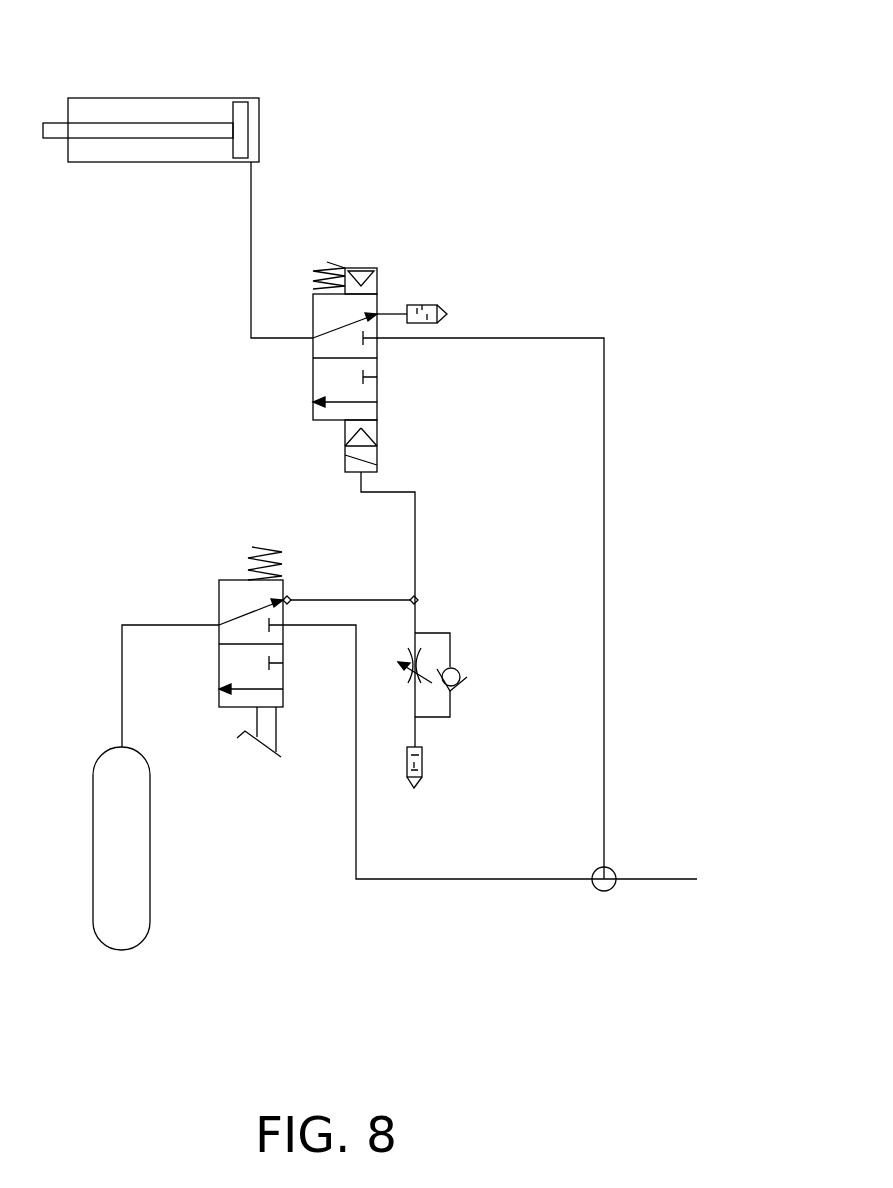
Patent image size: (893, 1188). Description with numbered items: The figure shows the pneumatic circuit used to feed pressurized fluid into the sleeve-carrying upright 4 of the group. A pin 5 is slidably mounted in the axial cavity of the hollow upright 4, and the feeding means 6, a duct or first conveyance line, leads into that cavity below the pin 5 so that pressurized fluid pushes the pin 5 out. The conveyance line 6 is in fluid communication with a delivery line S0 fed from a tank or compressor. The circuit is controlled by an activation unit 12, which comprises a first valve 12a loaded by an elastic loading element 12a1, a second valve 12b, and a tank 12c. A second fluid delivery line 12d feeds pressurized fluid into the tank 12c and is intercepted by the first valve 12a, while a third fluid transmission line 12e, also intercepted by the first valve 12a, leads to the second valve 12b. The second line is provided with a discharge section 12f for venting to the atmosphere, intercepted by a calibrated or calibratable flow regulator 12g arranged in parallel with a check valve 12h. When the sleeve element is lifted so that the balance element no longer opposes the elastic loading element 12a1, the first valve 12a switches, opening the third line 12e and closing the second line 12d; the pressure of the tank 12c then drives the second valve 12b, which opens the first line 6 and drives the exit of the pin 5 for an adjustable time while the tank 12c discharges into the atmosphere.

The upright 4 is at (167, 100).
The pin 5 is at (155, 138).
The feeding means 6 is at (251, 226).
The activation unit 12 is at (193, 492).
The first valve 12a is at (219, 598).
The elastic loading element 12a1 is at (252, 548).
The second valve 12b is at (313, 360).
The tank 12c is at (150, 872).
The second fluid delivery line 12d is at (440, 879).
The third fluid transmission line 12e is at (341, 600).
The discharge section 12f is at (416, 622).
The flow regulator 12g is at (410, 680).
The check valve 12h is at (468, 677).
The delivery line S0 is at (697, 879).